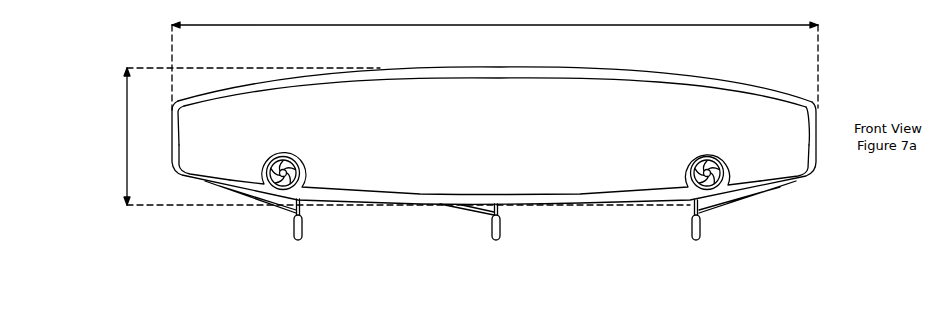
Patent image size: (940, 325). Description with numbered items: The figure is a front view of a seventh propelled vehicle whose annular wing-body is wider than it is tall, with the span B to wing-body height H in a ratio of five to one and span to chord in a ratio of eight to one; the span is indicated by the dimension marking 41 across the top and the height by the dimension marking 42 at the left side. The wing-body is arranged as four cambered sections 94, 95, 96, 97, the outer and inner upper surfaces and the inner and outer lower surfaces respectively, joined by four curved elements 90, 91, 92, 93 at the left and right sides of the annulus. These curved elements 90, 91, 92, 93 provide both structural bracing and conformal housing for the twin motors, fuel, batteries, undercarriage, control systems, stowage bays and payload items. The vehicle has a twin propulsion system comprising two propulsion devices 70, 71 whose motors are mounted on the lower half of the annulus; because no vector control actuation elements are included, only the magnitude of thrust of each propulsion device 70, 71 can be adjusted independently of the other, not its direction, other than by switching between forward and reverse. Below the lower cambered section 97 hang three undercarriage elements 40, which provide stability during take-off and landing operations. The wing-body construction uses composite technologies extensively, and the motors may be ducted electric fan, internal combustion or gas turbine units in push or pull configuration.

The undercarriage element 40 is at (302, 232).
The width dimension B 41 is at (542, 26).
The height dimension H 42 is at (127, 167).
The propulsion device 70 is at (299, 172).
The propulsion device 71 is at (692, 172).
The curved element 90 is at (186, 100).
The curved element 91 is at (188, 172).
The curved element 92 is at (805, 171).
The curved element 93 is at (806, 105).
The cambered section 94 is at (663, 73).
The cambered section 95 is at (362, 80).
The cambered section 96 is at (388, 196).
The cambered section 97 is at (568, 201).